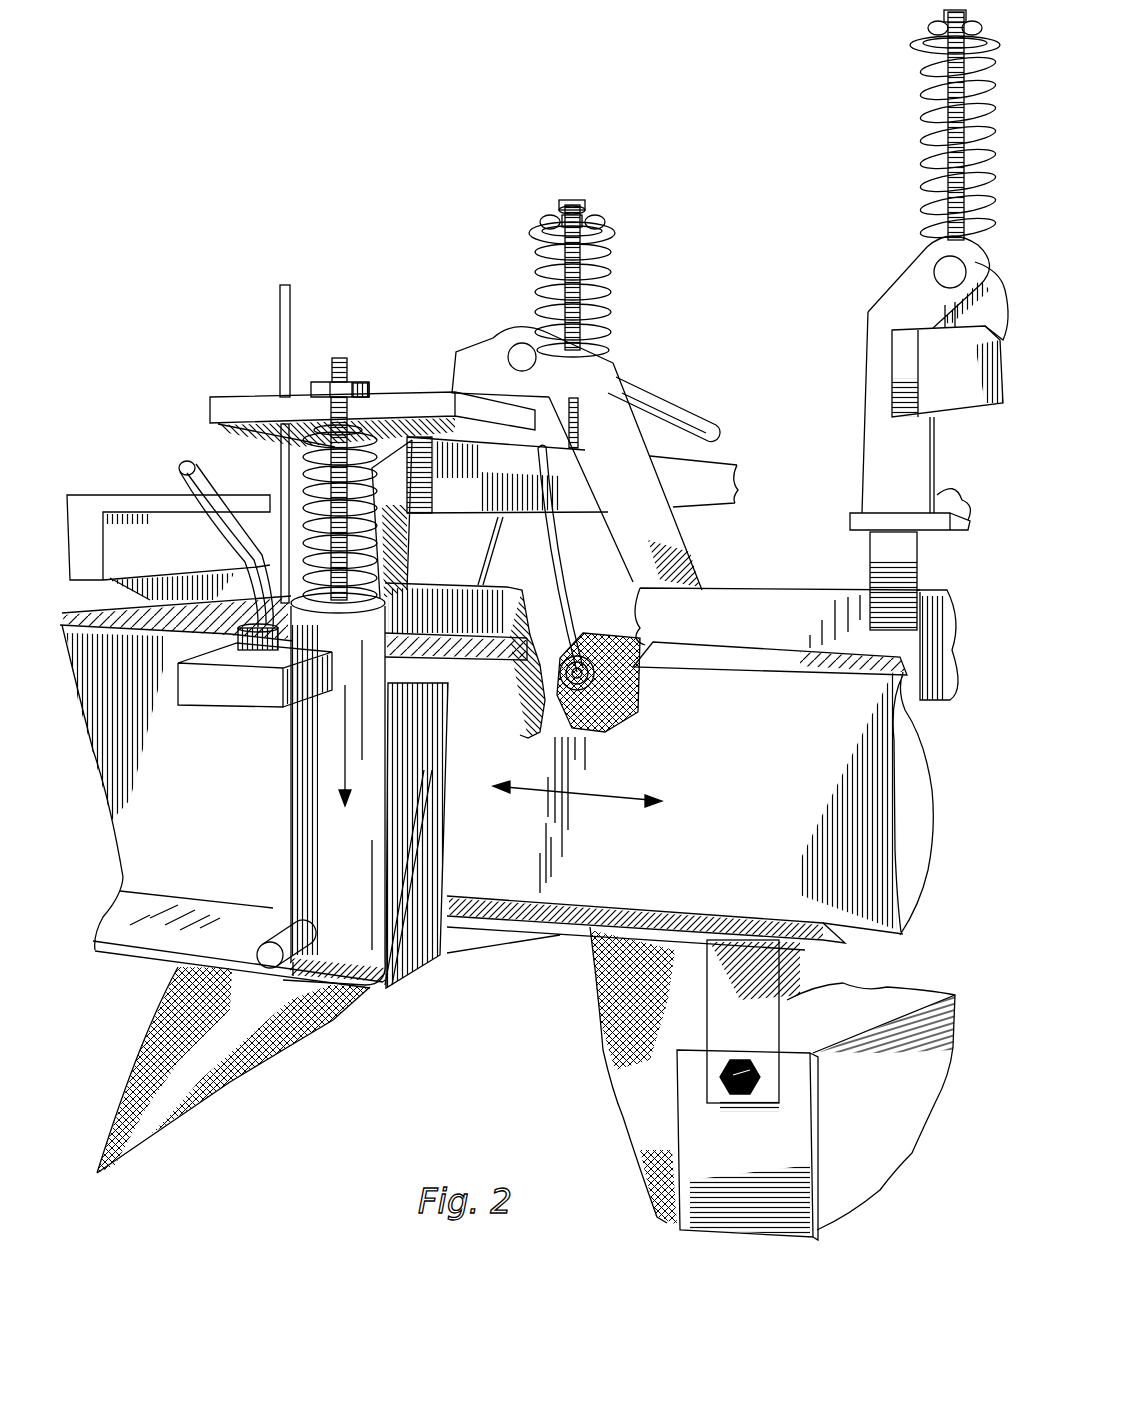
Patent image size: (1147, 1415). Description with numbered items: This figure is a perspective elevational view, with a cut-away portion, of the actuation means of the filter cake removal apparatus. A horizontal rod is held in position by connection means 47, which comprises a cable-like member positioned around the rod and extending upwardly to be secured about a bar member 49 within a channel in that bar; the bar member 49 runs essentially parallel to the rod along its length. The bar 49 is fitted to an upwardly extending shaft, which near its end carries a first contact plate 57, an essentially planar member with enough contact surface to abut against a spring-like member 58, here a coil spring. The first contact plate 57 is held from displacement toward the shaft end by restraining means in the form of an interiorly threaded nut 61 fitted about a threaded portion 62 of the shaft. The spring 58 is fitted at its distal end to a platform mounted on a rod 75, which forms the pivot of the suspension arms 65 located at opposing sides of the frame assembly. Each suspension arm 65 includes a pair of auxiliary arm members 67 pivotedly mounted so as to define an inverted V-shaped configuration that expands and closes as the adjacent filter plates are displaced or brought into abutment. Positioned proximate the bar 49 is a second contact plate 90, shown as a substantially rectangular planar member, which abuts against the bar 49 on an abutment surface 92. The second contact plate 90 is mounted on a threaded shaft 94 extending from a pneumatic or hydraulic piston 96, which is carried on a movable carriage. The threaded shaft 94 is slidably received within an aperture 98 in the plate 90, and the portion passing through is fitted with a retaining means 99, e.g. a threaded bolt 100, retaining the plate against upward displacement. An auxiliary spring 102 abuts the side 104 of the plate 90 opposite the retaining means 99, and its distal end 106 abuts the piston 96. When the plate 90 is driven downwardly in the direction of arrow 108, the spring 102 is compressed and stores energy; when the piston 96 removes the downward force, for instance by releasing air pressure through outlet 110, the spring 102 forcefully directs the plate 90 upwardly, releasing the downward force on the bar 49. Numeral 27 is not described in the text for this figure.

The soil / ground surface 27 is at (605, 1068).
The connection means 47 is at (540, 268).
The bar member 49 is at (480, 482).
The first contact plate 57 is at (612, 235).
The spring-like member 58 is at (612, 291).
The interiorly threaded nut 61 is at (585, 218).
The threaded portion 62 is at (565, 200).
The suspension arms 65 is at (608, 395).
The auxiliary arm members 67 is at (500, 388).
The rod 75 is at (670, 394).
The second contact plate 90 is at (430, 390).
The abutment surface 92 is at (481, 440).
The threaded shaft 94 is at (340, 355).
The pneumatic or hydraulic piston 96 is at (360, 877).
The aperture 98 is at (305, 449).
The retaining means 99 is at (318, 382).
The threaded bolt 100 is at (368, 382).
The auxiliary spring 102 is at (300, 492).
The side of plate 104 is at (235, 426).
The distal end of spring 106 is at (333, 640).
The arrow 108 is at (343, 763).
The outlet 110 is at (268, 935).